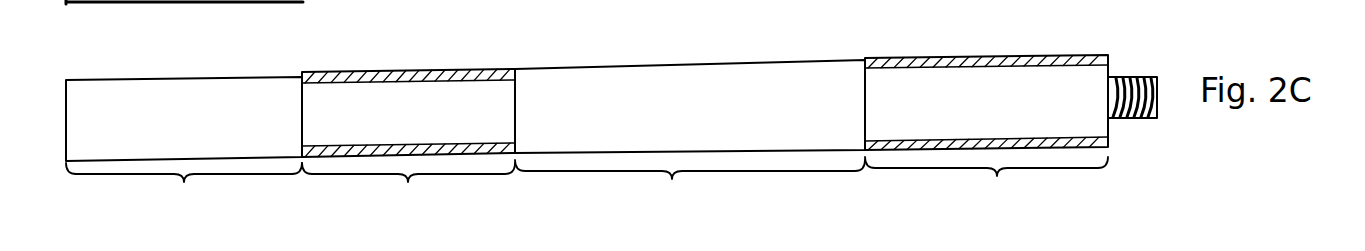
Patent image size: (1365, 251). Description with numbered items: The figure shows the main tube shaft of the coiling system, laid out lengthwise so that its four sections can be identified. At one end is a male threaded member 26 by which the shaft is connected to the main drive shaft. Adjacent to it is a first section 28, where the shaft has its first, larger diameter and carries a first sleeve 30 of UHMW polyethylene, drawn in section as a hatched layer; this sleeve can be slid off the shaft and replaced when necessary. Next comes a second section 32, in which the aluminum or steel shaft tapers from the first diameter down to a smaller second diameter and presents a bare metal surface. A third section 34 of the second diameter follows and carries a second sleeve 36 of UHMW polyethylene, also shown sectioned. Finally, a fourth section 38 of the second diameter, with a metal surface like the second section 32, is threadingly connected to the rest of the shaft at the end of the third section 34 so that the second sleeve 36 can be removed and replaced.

The male threaded member 26 is at (1127, 119).
The first section 28 is at (986, 129).
The first sleeve 30 is at (1013, 56).
The second section 32 is at (690, 131).
The third section 34 is at (408, 138).
The second sleeve 36 is at (462, 72).
The fourth section 38 is at (184, 147).